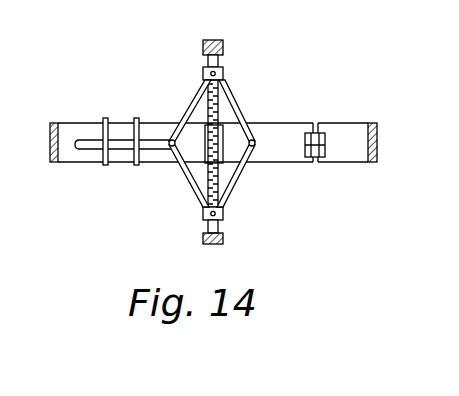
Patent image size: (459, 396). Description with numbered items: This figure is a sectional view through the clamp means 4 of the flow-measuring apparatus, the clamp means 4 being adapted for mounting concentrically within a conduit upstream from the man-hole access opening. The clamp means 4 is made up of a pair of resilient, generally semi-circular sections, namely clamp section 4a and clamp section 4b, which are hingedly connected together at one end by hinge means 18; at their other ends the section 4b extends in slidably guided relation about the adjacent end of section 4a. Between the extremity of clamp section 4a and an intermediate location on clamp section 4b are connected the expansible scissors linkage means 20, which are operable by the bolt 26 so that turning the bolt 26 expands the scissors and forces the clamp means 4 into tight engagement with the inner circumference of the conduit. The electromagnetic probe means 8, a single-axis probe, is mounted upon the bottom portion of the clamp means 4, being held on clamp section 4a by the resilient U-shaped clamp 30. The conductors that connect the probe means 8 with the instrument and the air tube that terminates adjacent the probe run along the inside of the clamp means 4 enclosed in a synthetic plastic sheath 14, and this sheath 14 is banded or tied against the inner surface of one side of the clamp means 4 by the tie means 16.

The clamp means 4 is at (285, 122).
The clamp section 4a is at (47, 123).
The clamp section 4b is at (355, 123).
The electromagnetic probe means 8 is at (219, 132).
The synthetic plastic sheath 14 is at (121, 150).
The tie means 16 is at (136, 121).
The hinge means 18 is at (318, 158).
The expansible scissors linkage means 20 is at (186, 114).
The bolt 26 is at (228, 181).
The resilient U-shaped clamp 30 is at (205, 166).